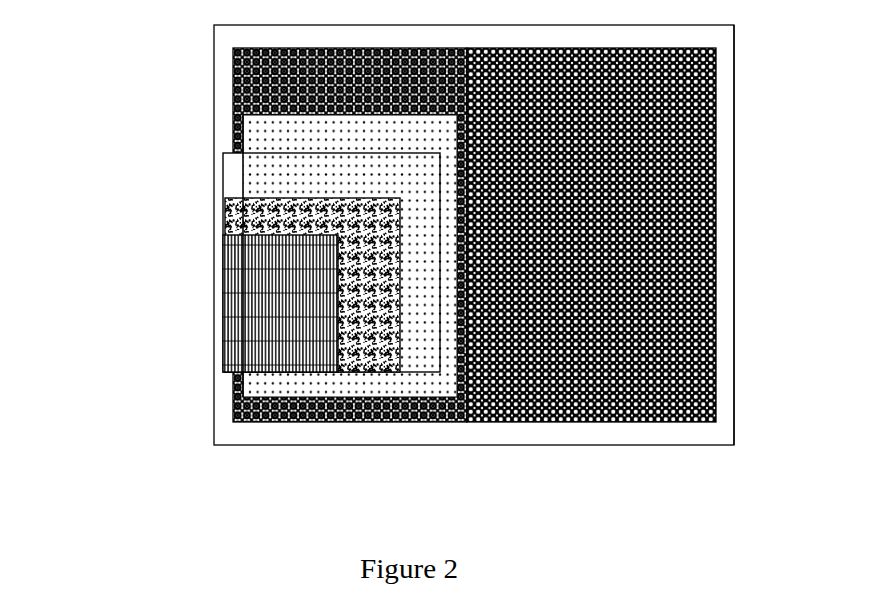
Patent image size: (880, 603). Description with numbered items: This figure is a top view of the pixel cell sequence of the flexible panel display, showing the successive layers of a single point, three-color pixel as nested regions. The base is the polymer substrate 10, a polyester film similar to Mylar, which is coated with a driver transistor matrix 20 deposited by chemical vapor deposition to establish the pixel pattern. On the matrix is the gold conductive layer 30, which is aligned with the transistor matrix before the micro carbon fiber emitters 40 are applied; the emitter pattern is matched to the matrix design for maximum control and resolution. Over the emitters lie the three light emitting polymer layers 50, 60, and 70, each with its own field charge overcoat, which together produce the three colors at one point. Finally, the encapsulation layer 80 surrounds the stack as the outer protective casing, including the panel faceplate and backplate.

The polymer substrate 10 is at (298, 435).
The driver transistor matrix 20 is at (510, 387).
The gold conductive layer 30 is at (240, 72).
The micro carbon fiber emitters 40 is at (262, 385).
The light emitting polymer layer 50 is at (230, 160).
The light emitting polymer layer 60 is at (233, 213).
The light emitting polymer layer 70 is at (233, 280).
The encapsulation layer 80 is at (734, 223).